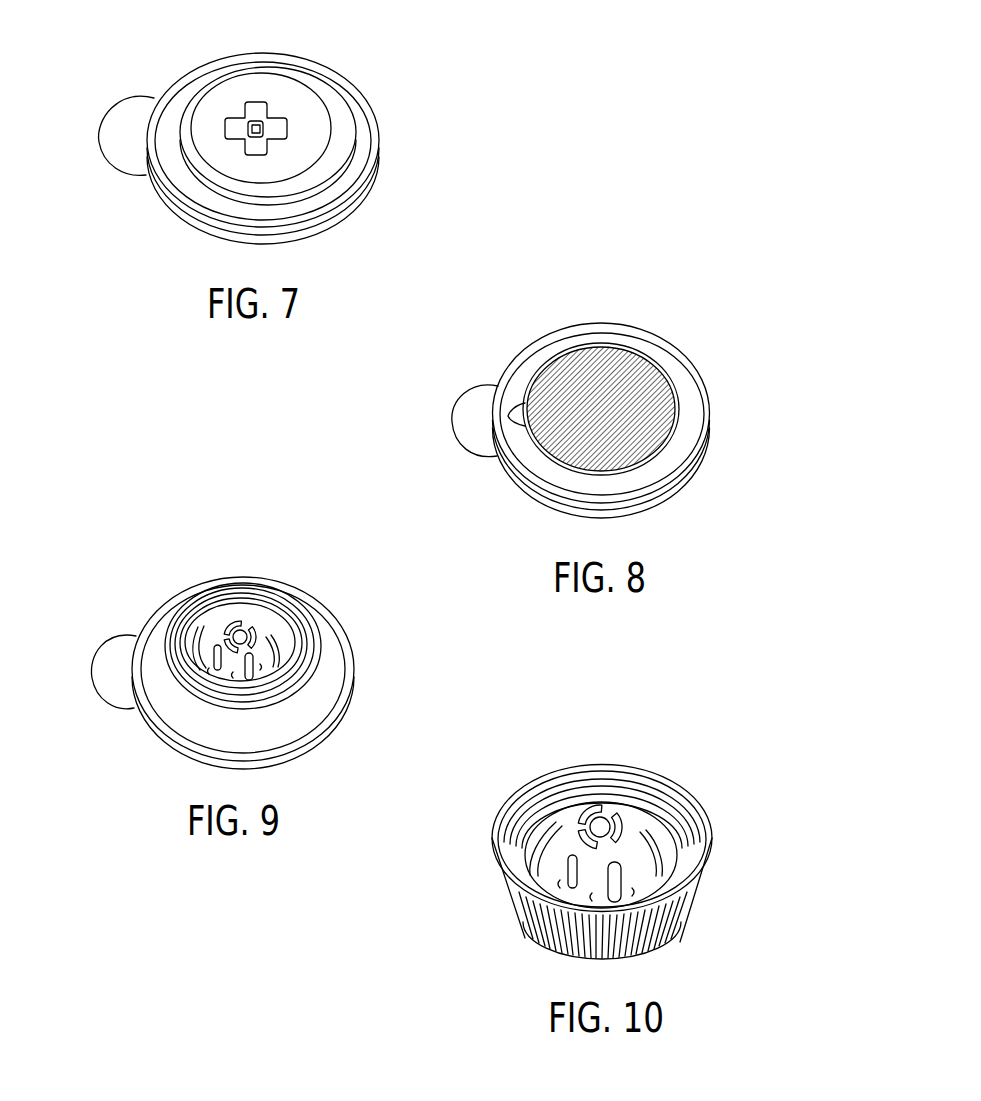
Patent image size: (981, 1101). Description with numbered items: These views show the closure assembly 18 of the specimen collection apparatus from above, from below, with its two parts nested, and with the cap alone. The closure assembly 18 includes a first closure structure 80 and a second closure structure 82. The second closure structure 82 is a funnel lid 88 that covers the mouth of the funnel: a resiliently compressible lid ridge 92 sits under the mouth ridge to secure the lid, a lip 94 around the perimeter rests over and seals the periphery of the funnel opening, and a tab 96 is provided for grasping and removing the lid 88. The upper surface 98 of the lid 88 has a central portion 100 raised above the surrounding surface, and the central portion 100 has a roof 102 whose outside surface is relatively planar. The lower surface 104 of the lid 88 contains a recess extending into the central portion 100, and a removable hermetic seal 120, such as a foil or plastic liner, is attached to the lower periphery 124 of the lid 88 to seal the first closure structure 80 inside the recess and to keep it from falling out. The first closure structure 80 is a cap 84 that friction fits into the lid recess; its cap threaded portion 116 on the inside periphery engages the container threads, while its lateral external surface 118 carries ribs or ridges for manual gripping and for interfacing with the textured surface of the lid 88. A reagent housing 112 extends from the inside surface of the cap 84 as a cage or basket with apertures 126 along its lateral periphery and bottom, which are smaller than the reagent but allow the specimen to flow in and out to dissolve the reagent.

In FIG. 7, the closure assembly 18 is at (511, 136).
In FIG. 8, the closure assembly 18 is at (344, 418).
In FIG. 9, the first closure structure 80 is at (119, 534).
In FIG. 10, the first closure structure 80 is at (414, 902).
In FIG. 7, the second closure structure 82 is at (438, 46).
In FIG. 8, the second closure structure 82 is at (707, 272).
In FIG. 9, the second closure structure 82 is at (104, 561).
In FIG. 9, the cap 84 is at (272, 590).
In FIG. 10, the cap 84 is at (420, 937).
In FIG. 7, the funnel lid 88 is at (458, 66).
In FIG. 8, the funnel lid 88 is at (727, 292).
In FIG. 9, the funnel lid 88 is at (163, 623).
In FIG. 7, the lid ridge 92 is at (263, 140).
In FIG. 8, the lid ridge 92 is at (657, 497).
In FIG. 9, the lid ridge 92 is at (305, 752).
In FIG. 7, the lip 94 is at (358, 180).
In FIG. 8, the lip 94 is at (528, 498).
In FIG. 9, the lip 94 is at (170, 758).
In FIG. 7, the tab 96 is at (125, 148).
In FIG. 8, the tab 96 is at (473, 407).
In FIG. 9, the tab 96 is at (118, 662).
In FIG. 7, the upper surface 98 is at (348, 143).
In FIG. 7, the central portion 100 is at (262, 84).
In FIG. 7, the roof 102 is at (220, 104).
In FIG. 7, the lower surface 104 is at (263, 141).
In FIG. 8, the lower surface 104 is at (567, 341).
In FIG. 9, the lower surface 104 is at (307, 603).
In FIG. 9, the reagent housing 112 is at (263, 648).
In FIG. 10, the reagent housing 112 is at (575, 818).
In FIG. 9, the cap threaded portion 116 is at (217, 588).
In FIG. 10, the cap threaded portion 116 is at (658, 803).
In FIG. 10, the lateral external surface 118 is at (540, 938).
In FIG. 8, the removable hermetic seal 120 is at (655, 428).
In FIG. 9, the lower periphery 124 is at (317, 622).
In FIG. 9, the apertures 126 is at (285, 693).
In FIG. 10, the apertures 126 is at (637, 827).